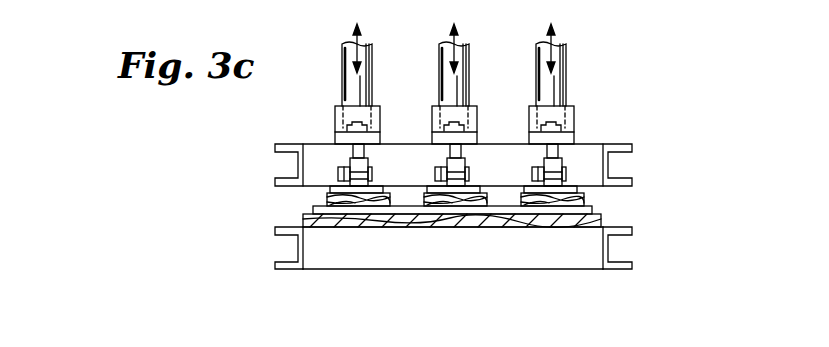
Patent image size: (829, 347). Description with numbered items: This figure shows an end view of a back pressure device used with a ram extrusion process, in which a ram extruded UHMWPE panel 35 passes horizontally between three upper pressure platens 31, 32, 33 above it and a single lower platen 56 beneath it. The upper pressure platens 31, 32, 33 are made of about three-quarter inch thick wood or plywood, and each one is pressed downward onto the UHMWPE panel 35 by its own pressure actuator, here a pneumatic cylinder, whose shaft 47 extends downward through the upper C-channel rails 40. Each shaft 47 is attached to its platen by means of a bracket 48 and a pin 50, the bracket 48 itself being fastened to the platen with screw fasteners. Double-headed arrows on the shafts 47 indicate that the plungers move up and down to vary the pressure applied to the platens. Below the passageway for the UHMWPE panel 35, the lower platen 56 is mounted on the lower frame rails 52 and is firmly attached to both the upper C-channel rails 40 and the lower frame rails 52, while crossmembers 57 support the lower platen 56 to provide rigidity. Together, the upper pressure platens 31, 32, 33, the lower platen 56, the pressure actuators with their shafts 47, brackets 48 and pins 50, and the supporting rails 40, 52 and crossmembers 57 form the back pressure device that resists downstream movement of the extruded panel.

The shaft 47 is at (342, 78).
The pin 50 is at (337, 173).
The bracket 48 is at (380, 186).
The C-channel rails 40 is at (290, 144).
The UHMWPE panel 35 is at (313, 212).
The lower platen 56 is at (601, 220).
The upper pressure platen 31 is at (358, 207).
The upper pressure platen 32 is at (446, 207).
The upper pressure platen 33 is at (545, 207).
The crossmembers 57 is at (577, 270).
The lower frame rails 52 is at (292, 270).